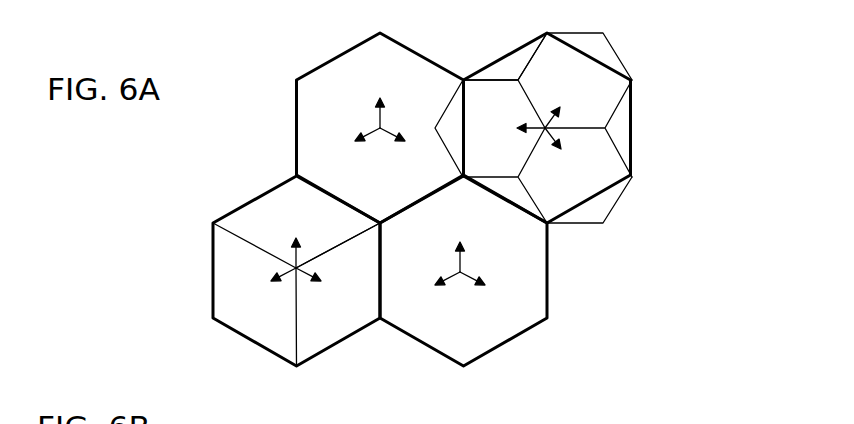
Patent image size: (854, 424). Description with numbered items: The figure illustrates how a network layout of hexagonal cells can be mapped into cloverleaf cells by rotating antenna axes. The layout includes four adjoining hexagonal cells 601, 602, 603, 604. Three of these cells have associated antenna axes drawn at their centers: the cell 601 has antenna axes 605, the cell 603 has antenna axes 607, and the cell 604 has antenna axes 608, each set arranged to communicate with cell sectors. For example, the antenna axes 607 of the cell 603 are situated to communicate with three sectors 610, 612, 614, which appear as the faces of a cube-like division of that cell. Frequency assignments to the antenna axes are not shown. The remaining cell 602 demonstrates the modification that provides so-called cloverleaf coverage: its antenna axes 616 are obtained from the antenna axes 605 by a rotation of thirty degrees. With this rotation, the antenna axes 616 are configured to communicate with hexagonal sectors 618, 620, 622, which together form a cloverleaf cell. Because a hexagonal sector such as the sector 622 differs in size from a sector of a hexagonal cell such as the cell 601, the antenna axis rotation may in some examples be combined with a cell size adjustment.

The hexagonal cell 601 is at (297, 130).
The hexagonal cell 602 is at (632, 128).
The hexagonal cell 603 is at (238, 336).
The hexagonal cell 604 is at (512, 343).
The antenna axes 605 is at (380, 132).
The antenna axes 607 is at (300, 270).
The antenna axes 608 is at (470, 275).
The sector 610 is at (266, 207).
The sector 612 is at (221, 293).
The sector 614 is at (333, 327).
The antenna axes 616 is at (548, 143).
The hexagonal sector 618 is at (615, 62).
The hexagonal sector 620 is at (598, 214).
The hexagonal sector 622 is at (488, 98).